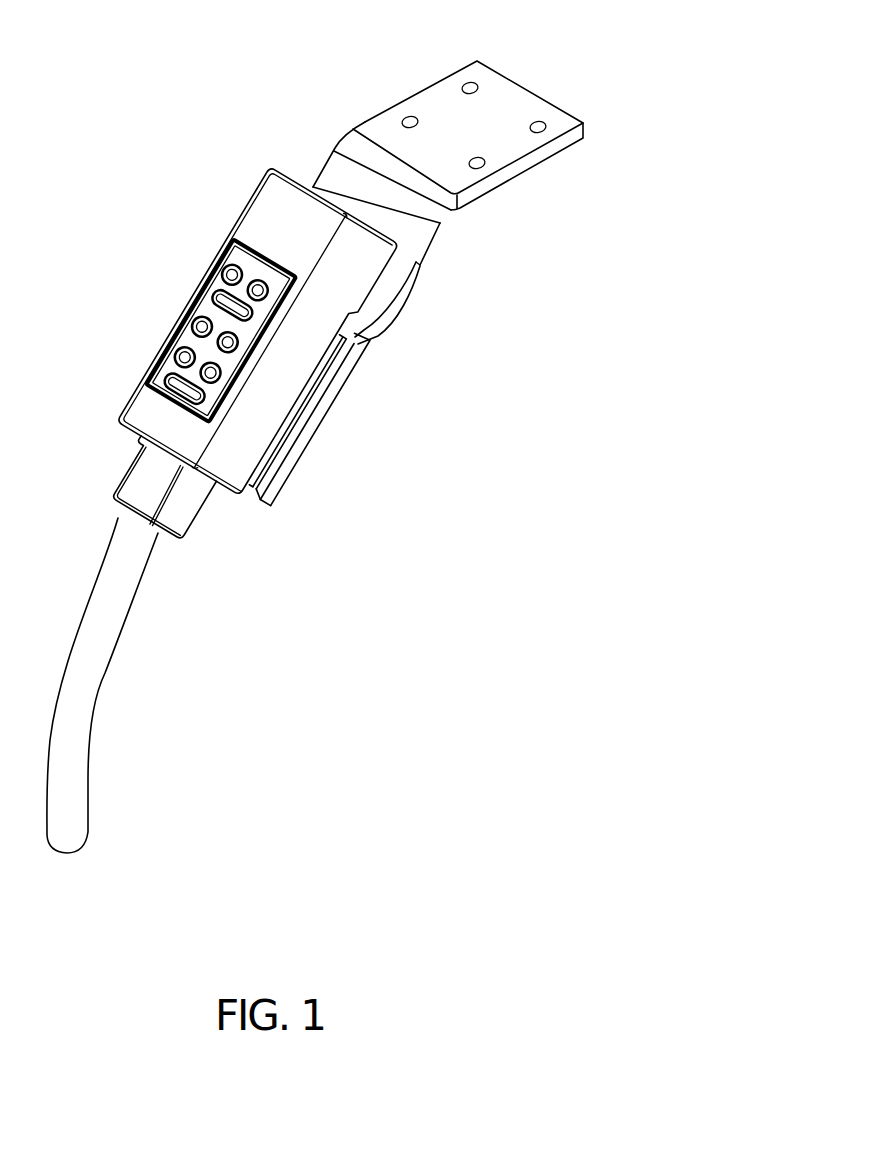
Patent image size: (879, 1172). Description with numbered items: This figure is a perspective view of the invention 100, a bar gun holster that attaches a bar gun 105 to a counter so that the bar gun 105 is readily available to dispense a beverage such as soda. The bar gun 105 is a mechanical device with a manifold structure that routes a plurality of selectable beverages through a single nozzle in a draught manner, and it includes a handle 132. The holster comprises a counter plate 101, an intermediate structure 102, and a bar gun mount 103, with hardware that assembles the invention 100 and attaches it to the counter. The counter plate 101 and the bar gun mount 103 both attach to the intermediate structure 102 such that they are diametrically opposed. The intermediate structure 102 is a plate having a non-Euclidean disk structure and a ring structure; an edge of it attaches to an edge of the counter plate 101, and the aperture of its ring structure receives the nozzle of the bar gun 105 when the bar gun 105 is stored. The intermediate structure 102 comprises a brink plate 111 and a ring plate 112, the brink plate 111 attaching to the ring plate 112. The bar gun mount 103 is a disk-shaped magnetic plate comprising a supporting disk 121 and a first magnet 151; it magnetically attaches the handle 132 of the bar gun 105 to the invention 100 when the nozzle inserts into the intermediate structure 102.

The invention 100 is at (115, 92).
The counter plate 101 is at (546, 94).
The intermediate structure 102 is at (388, 337).
The bar gun mount 103 is at (318, 433).
The bar gun 105 is at (243, 222).
The brink plate 111 is at (459, 211).
The ring plate 112 is at (403, 311).
The supporting disk 121 is at (273, 497).
The handle 132 is at (233, 470).
The first magnet 151 is at (275, 462).